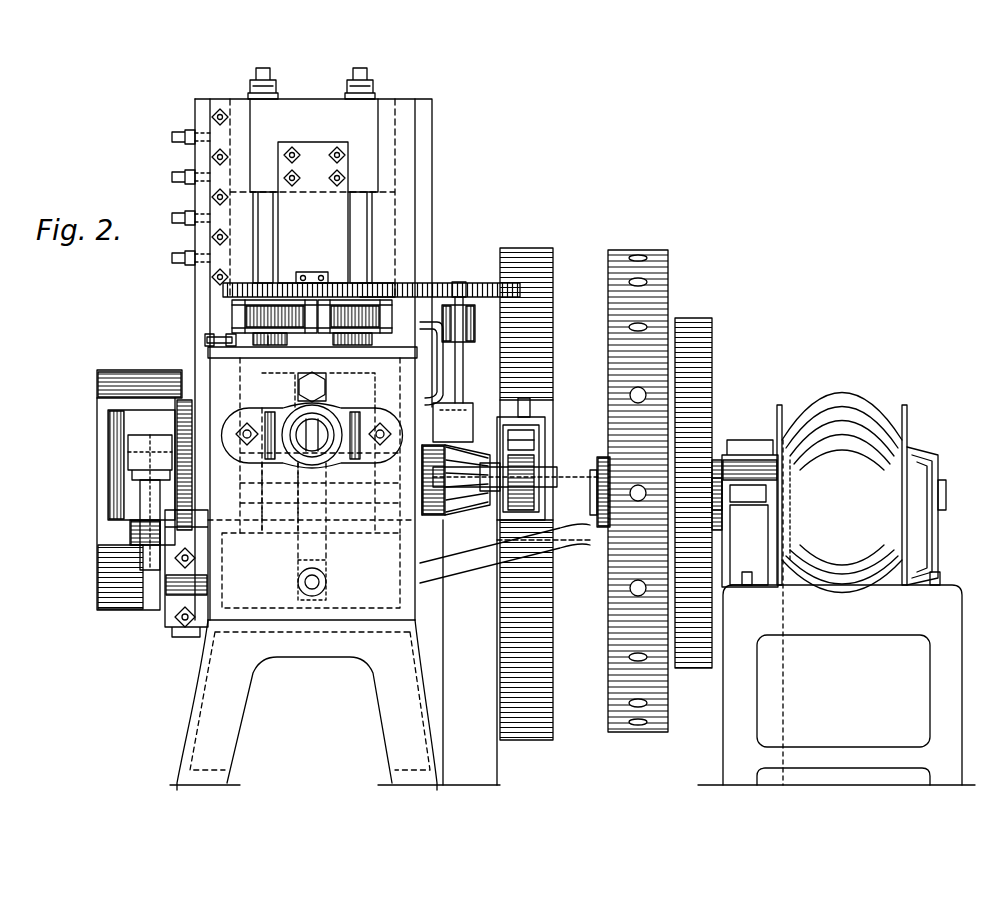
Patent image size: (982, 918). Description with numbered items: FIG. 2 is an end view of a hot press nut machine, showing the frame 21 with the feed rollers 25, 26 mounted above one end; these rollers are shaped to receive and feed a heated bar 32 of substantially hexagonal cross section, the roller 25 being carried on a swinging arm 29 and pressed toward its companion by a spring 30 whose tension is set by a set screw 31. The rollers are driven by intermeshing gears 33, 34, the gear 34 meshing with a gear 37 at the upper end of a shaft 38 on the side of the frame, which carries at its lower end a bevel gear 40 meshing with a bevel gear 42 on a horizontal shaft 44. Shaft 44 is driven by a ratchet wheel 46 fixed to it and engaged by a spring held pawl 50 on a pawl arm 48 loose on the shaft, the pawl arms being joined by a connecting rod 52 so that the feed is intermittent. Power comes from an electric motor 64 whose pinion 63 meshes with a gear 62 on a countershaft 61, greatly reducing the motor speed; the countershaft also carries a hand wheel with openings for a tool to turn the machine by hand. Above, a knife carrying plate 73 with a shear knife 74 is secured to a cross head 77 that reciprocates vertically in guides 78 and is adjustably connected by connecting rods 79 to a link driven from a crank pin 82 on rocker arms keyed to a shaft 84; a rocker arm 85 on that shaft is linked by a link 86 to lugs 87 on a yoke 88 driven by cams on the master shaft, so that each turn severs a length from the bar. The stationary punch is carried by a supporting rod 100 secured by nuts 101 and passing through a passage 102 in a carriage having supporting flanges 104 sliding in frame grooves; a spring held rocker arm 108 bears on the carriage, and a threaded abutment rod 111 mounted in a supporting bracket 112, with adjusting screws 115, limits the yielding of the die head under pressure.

The frame 21 is at (227, 657).
The feed roller 25 is at (240, 318).
The feed roller 26 is at (388, 320).
The swinging arm 29 is at (272, 345).
The spring 30 is at (256, 345).
The set screw 31 is at (205, 340).
The bar 32 is at (312, 358).
The gear 33 is at (223, 290).
The gear 34 is at (380, 284).
The gear 37 is at (466, 286).
The shaft 38 is at (458, 282).
The bevel gear 40 is at (453, 422).
The bevel gear 42 is at (425, 500).
The horizontal shaft 44 is at (462, 490).
The ratchet wheel 46 is at (548, 452).
The pawl arm 48 is at (535, 415).
The pawl 50 is at (545, 432).
The connecting rod 52 is at (533, 248).
The countershaft 61 is at (591, 527).
The gear 62 is at (712, 410).
The pinion 63 is at (722, 522).
The electric motor 64 is at (836, 589).
The knife carrying plate 73 is at (312, 212).
The shear knife 74 is at (314, 272).
The cross head 77 is at (314, 145).
The guides 78 is at (200, 118).
The connecting rods 79 is at (355, 72).
The crank pin 82 is at (105, 395).
The shaft 84 is at (170, 582).
The rocker arm 85 is at (118, 505).
The link 86 is at (130, 455).
The lugs 87 is at (183, 487).
The yoke 88 is at (115, 500).
The supporting rod 100 is at (318, 386).
The nuts 101 is at (298, 391).
The passage 102 is at (327, 582).
The supporting flanges 104 is at (334, 385).
The rocker arm 108 is at (332, 538).
The abutment rod 111 is at (320, 458).
The supporting bracket 112 is at (278, 463).
The adjusting screws 115 is at (244, 442).